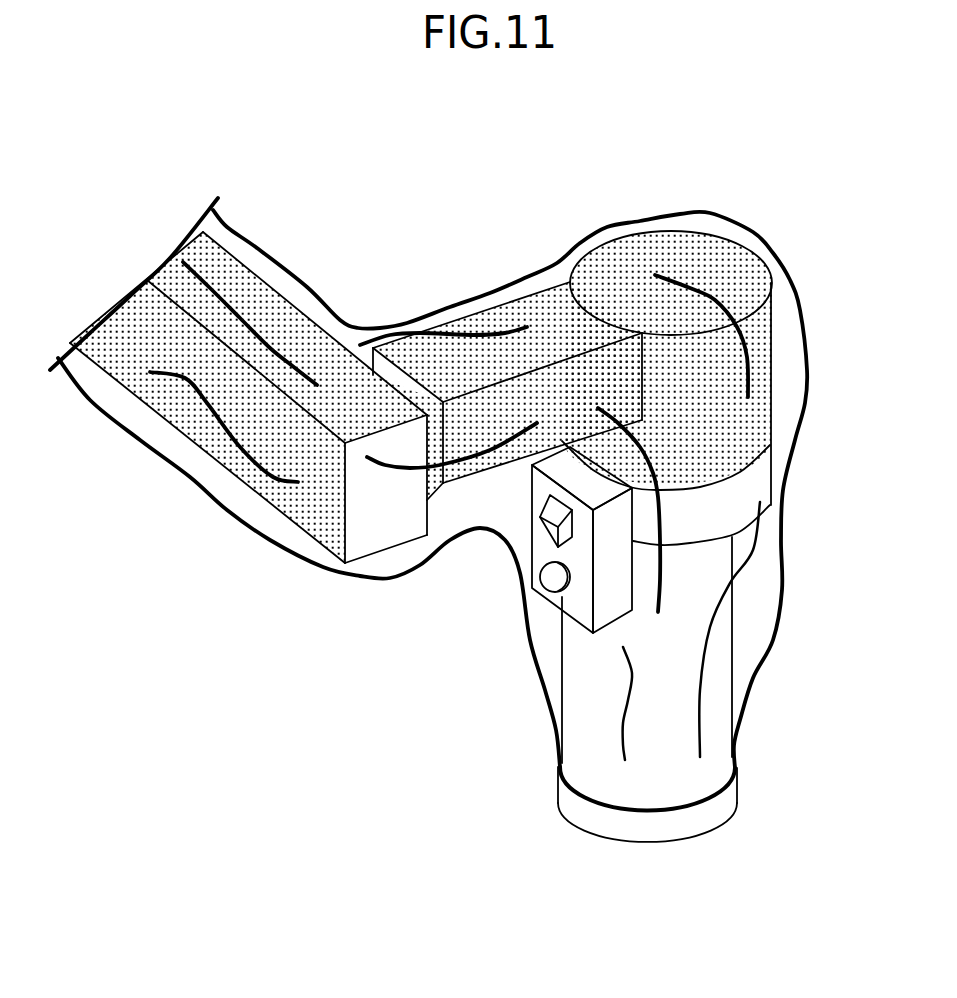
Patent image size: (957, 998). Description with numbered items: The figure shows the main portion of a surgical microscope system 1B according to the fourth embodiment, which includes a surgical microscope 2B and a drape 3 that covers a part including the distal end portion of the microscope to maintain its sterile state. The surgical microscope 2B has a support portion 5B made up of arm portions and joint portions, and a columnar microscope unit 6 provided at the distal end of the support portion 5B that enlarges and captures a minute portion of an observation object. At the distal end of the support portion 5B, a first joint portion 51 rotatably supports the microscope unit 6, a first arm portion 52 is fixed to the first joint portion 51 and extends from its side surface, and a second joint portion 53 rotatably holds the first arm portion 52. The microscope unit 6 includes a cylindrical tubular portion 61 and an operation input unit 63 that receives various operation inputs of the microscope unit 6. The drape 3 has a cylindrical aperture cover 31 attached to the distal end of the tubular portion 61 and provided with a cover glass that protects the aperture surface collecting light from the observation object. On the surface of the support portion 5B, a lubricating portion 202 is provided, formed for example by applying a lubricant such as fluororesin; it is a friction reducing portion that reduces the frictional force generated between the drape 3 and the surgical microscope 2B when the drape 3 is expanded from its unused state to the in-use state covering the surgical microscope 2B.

The surgical microscope system 1B is at (498, 121).
The surgical microscope 2B is at (468, 367).
The drape 3 is at (773, 250).
The support portion 5B is at (667, 358).
The microscope unit 6 is at (692, 632).
The aperture cover 31 is at (727, 800).
The first joint portion 51 is at (727, 250).
The first arm portion 52 is at (517, 307).
The second joint portion 53 is at (403, 383).
The tubular portion 61 is at (732, 655).
The operation input unit 63 is at (537, 552).
The lubricating portion 202 is at (143, 389).